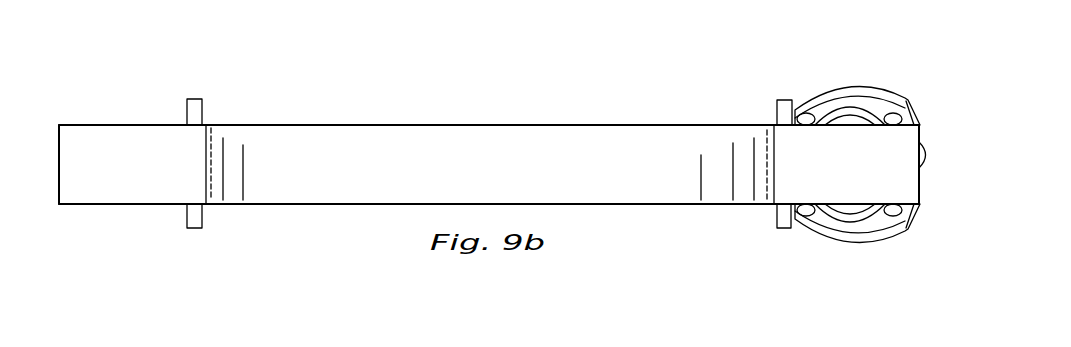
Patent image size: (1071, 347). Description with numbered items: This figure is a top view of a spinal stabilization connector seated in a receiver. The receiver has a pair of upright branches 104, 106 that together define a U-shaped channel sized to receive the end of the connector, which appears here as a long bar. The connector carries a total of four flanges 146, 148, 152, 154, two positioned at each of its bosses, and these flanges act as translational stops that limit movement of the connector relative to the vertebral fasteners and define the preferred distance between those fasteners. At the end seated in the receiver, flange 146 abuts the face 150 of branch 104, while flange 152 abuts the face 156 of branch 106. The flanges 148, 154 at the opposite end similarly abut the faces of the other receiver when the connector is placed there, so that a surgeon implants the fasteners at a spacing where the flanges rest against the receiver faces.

The flange 154 is at (193, 98).
The flange 148 is at (195, 229).
The flange 152 is at (780, 99).
The flange 146 is at (782, 230).
The face 156 is at (807, 99).
The face 150 is at (805, 235).
The upright branch 106 is at (849, 71).
The upright branch 104 is at (851, 259).